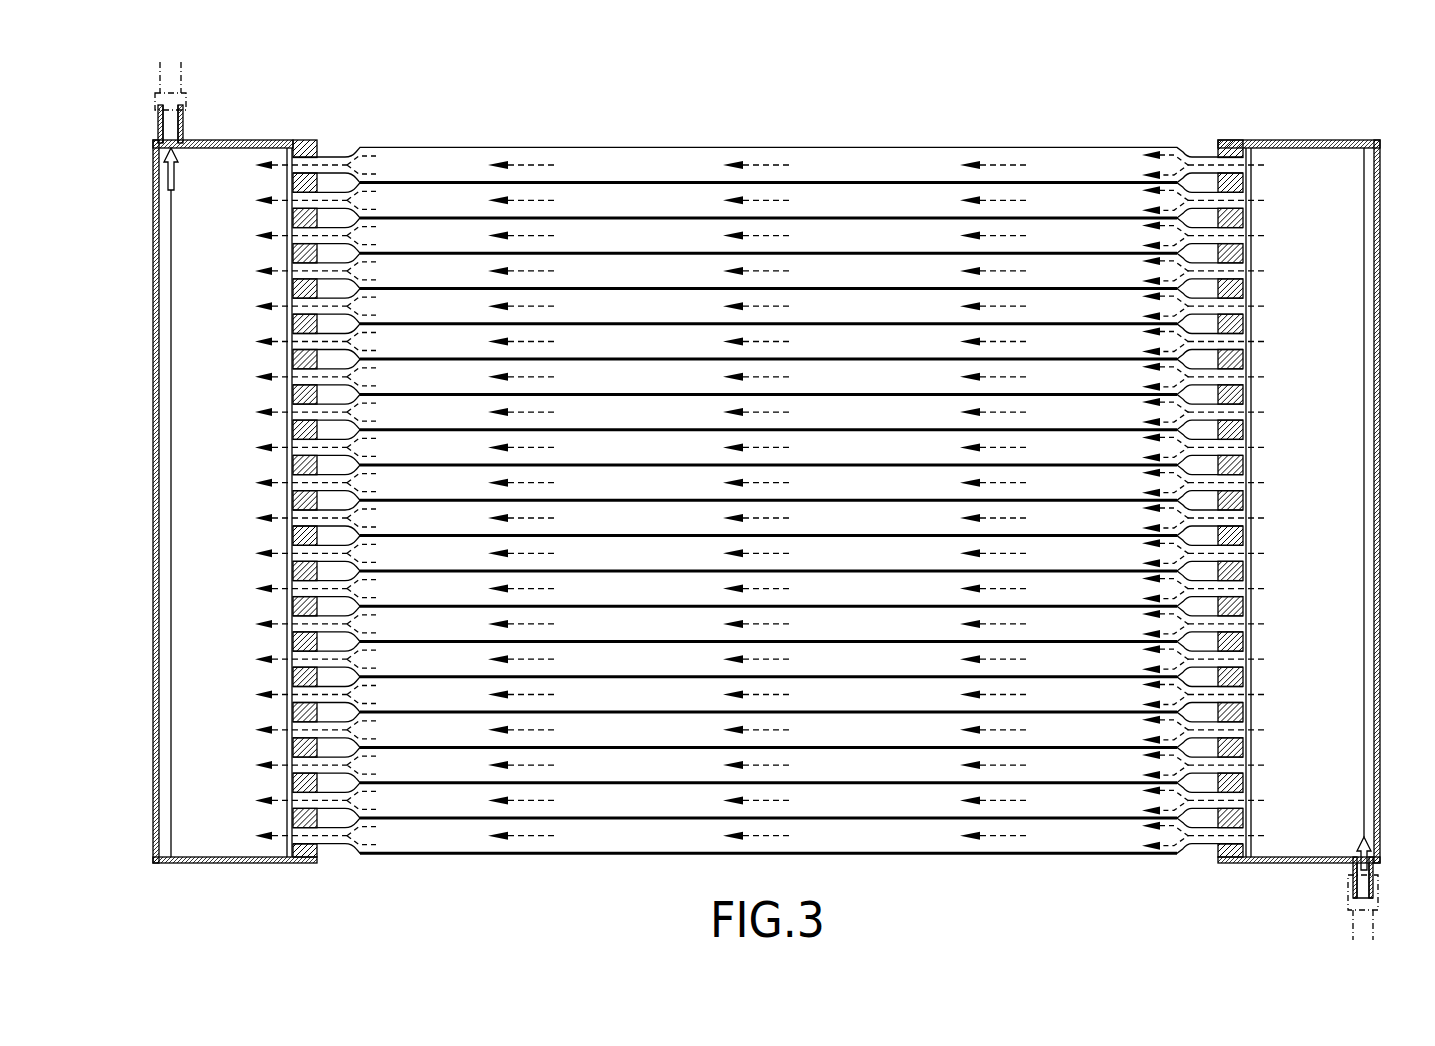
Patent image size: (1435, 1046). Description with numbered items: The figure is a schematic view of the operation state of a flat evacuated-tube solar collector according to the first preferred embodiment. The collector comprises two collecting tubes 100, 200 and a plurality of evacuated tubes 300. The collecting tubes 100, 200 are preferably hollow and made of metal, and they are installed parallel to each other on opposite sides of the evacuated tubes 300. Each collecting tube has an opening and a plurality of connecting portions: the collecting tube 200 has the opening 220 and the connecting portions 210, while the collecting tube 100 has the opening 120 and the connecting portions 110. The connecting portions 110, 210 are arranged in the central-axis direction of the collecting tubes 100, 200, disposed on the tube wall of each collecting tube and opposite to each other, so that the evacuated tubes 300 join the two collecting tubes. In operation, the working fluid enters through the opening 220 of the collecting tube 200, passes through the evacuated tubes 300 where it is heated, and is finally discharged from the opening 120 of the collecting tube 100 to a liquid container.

The collecting tube 100 is at (178, 369).
The connecting portions 110 is at (316, 146).
The opening 120 is at (172, 120).
The collecting tube 200 is at (1358, 634).
The connecting portions 210 is at (1225, 142).
The opening 220 is at (1362, 884).
The evacuated tubes 300 is at (770, 157).